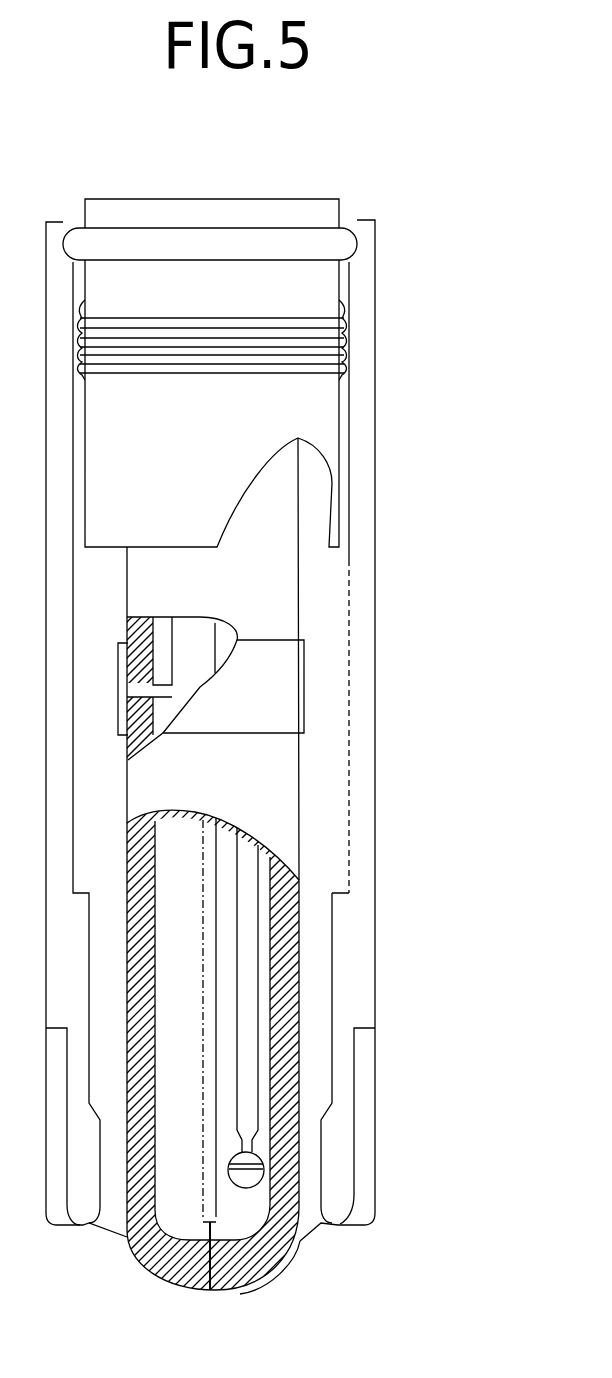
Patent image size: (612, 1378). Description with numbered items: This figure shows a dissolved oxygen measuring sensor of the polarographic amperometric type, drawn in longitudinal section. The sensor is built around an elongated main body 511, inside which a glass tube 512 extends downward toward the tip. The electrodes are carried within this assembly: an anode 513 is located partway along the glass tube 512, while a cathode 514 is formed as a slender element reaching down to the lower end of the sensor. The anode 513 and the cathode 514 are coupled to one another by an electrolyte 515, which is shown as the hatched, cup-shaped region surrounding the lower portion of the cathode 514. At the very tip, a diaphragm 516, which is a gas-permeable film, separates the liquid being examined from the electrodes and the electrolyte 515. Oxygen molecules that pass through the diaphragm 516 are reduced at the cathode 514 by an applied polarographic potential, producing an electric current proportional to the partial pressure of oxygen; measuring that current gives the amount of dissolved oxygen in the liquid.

The main body 511 is at (375, 345).
The glass tube 512 is at (280, 773).
The anode 513 is at (287, 665).
The cathode 514 is at (205, 1222).
The electrolyte 515 is at (317, 923).
The diaphragm 516 is at (290, 1279).